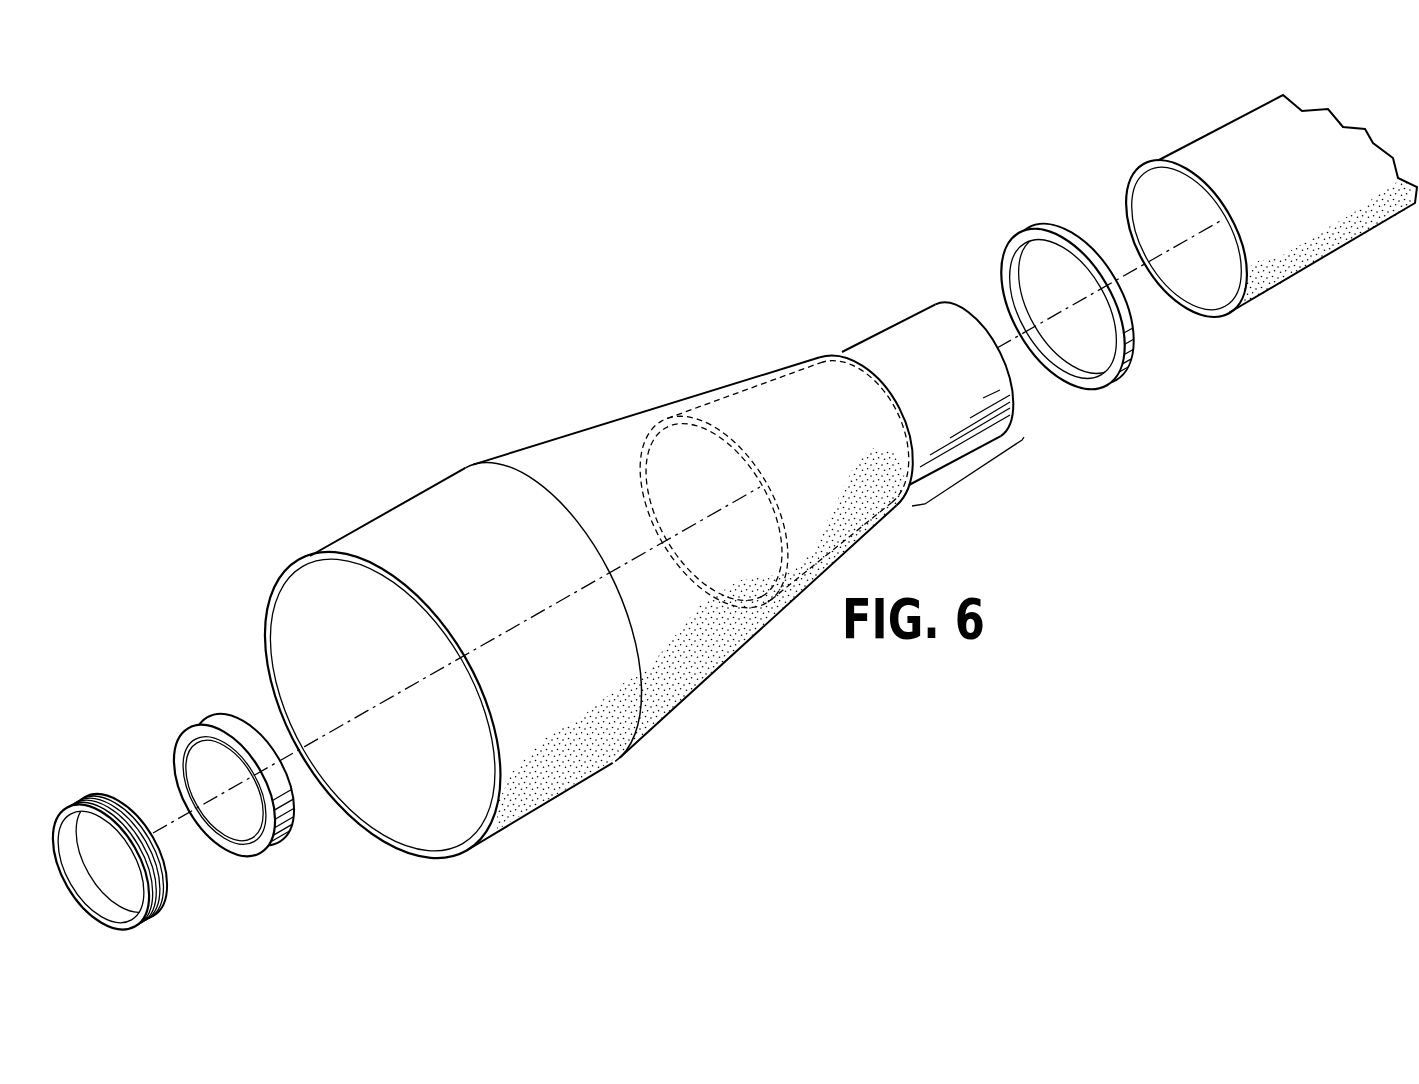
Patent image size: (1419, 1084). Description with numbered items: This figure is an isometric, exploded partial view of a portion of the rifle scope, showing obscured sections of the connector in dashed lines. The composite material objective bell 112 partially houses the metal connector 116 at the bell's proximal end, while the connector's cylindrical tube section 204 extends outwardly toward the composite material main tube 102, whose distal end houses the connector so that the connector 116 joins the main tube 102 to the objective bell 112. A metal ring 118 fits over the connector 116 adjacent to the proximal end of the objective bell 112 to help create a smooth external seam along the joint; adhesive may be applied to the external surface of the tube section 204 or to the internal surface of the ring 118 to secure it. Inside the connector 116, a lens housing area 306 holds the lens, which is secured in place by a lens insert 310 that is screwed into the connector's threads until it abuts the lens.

The main tube 102 is at (1203, 136).
The objective bell 112 is at (554, 426).
The connector 116 is at (648, 428).
The ring 118 is at (1031, 229).
The tube section 204 is at (967, 478).
The lens housing area 306 is at (207, 724).
The lens insert 310 is at (78, 801).